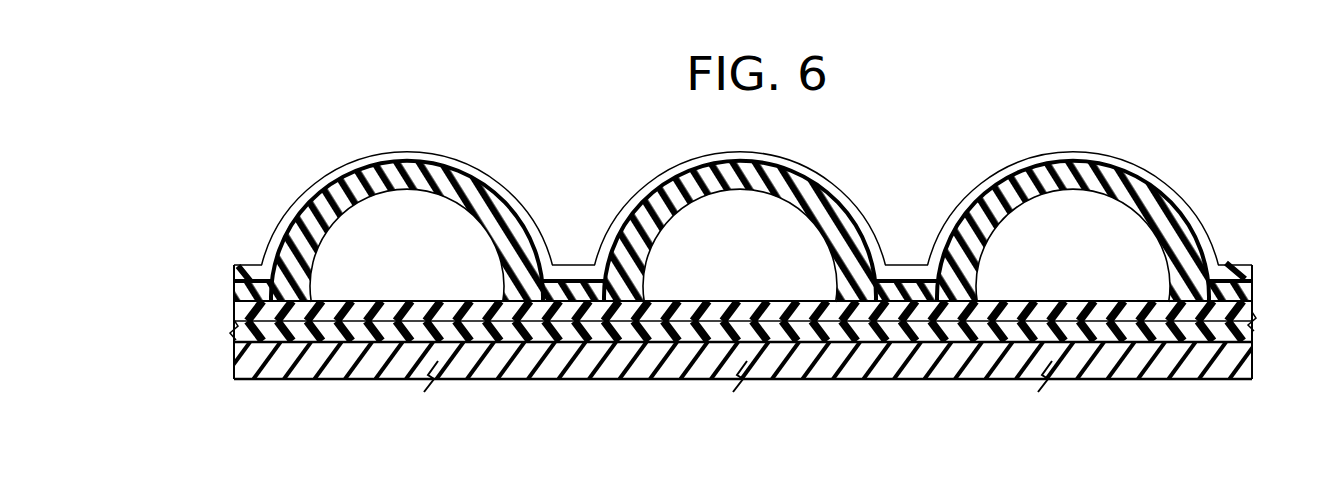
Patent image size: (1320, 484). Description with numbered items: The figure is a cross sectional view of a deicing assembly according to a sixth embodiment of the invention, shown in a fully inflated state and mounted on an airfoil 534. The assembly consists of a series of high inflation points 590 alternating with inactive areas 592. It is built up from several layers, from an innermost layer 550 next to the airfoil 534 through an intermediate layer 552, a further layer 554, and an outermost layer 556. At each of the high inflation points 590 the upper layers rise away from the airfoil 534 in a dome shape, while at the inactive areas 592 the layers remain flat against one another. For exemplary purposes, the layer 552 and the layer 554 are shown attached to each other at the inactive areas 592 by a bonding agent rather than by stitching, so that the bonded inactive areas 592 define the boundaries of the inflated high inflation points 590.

The airfoil 534 is at (835, 370).
The layer 550 is at (1217, 330).
The layer 552 is at (1110, 310).
The layer 554 is at (1190, 208).
The layer 556 is at (1208, 250).
The high inflation point 590 is at (413, 151).
The inactive area 592 is at (573, 265).